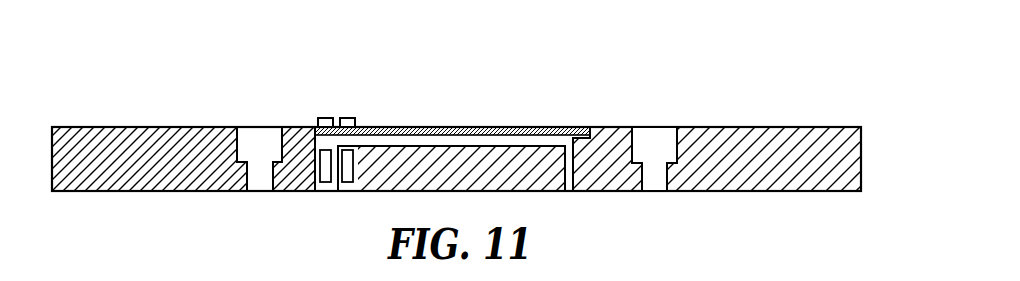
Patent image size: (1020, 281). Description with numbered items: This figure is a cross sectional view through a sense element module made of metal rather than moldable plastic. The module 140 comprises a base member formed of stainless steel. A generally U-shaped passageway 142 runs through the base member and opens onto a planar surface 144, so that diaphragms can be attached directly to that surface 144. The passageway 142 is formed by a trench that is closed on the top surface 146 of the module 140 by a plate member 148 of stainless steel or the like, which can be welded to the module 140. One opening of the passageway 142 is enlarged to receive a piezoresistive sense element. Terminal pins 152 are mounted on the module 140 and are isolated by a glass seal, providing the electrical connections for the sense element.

The module 140 is at (767, 127).
The passageway 142 is at (493, 142).
The planar surface 144 is at (758, 192).
The top surface 146 is at (702, 127).
The plate member 148 is at (426, 127).
The terminal pins 152 is at (348, 118).